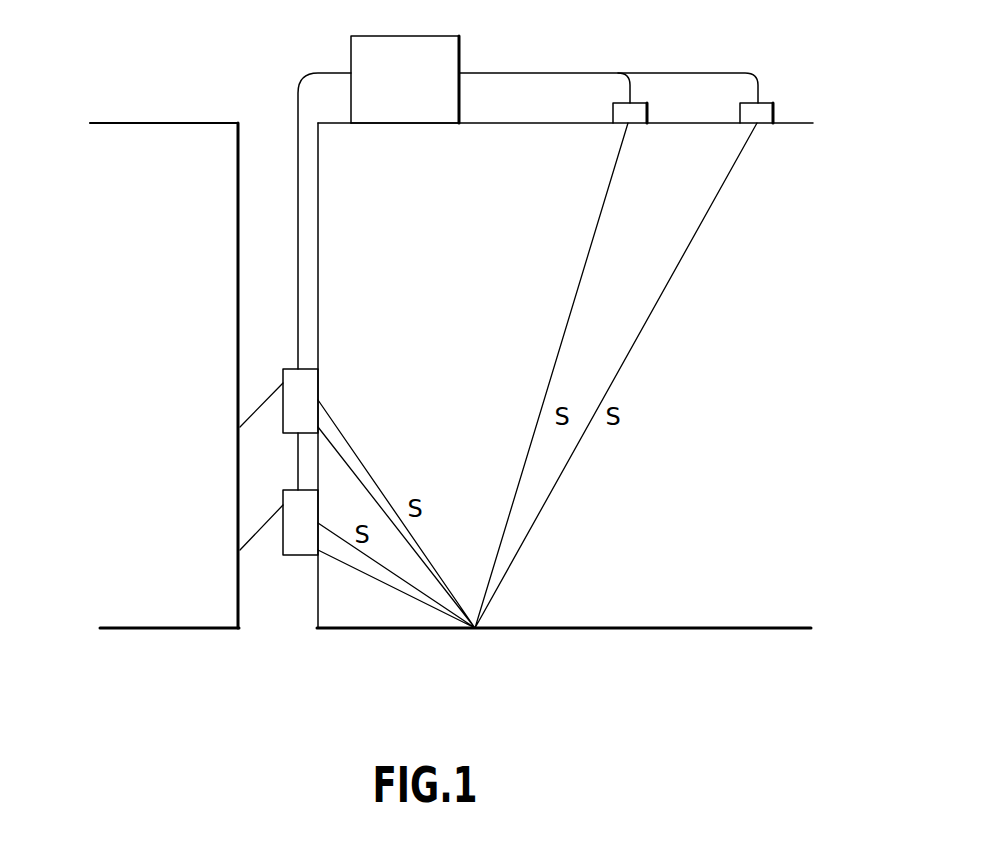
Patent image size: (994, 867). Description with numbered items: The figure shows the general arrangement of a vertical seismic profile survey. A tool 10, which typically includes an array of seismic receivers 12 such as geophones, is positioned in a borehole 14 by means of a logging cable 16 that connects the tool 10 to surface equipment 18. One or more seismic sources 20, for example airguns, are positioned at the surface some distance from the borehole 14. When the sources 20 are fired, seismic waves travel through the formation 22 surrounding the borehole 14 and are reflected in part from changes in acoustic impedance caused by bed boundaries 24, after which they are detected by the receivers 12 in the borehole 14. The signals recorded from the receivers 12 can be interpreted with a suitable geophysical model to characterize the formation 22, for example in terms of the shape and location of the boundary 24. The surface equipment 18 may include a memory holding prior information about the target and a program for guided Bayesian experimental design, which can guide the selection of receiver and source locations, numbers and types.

The tool 10 is at (263, 456).
The seismic receivers 12 is at (307, 388).
The borehole 14 is at (258, 259).
The logging cable 16 is at (298, 257).
The surface equipment 18 is at (461, 54).
The seismic sources 20 is at (743, 113).
The formation 22 is at (479, 347).
The bed boundaries 24 is at (693, 628).